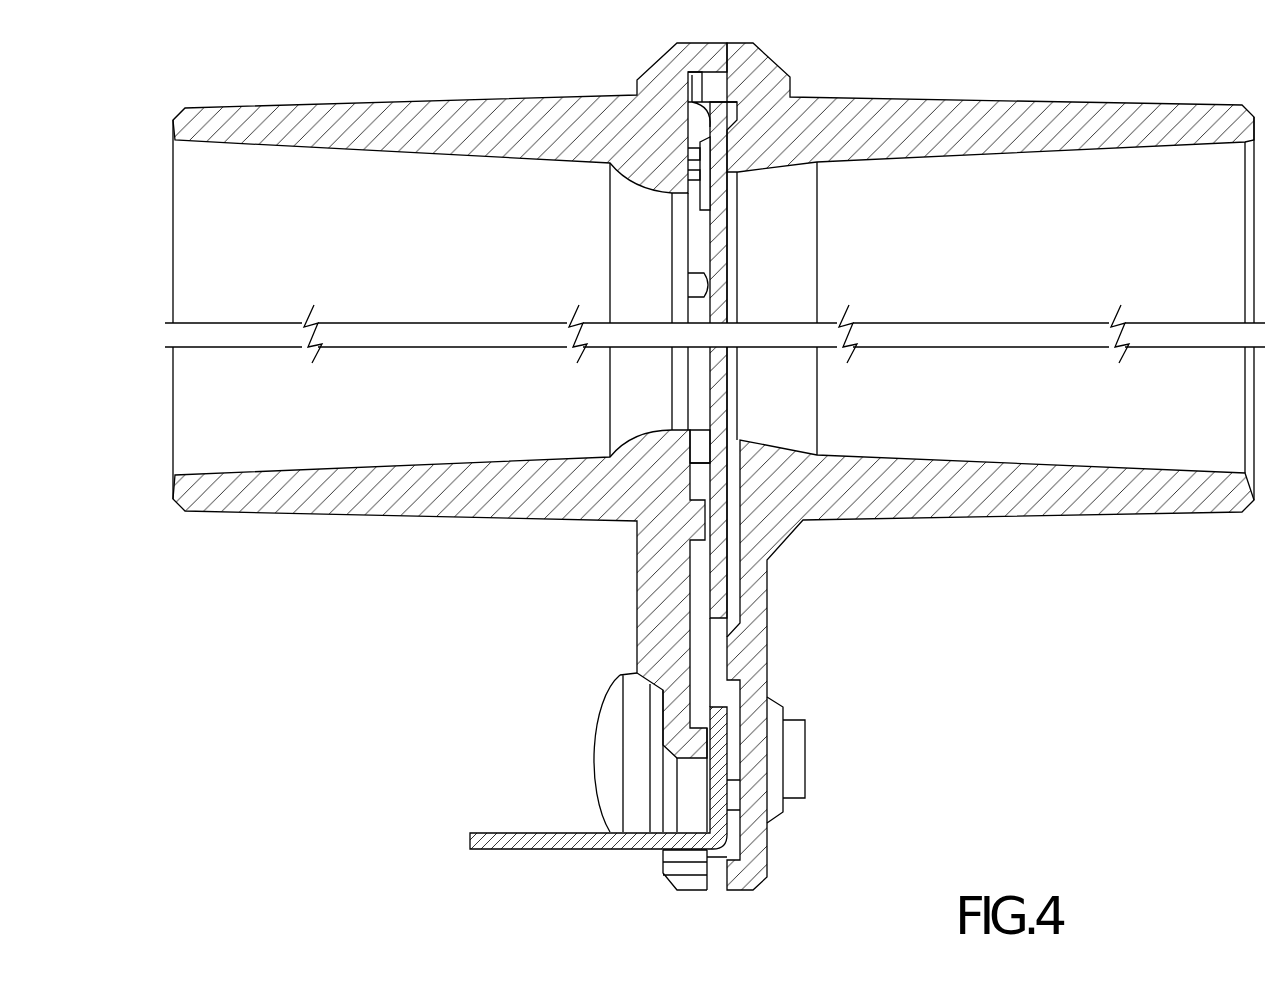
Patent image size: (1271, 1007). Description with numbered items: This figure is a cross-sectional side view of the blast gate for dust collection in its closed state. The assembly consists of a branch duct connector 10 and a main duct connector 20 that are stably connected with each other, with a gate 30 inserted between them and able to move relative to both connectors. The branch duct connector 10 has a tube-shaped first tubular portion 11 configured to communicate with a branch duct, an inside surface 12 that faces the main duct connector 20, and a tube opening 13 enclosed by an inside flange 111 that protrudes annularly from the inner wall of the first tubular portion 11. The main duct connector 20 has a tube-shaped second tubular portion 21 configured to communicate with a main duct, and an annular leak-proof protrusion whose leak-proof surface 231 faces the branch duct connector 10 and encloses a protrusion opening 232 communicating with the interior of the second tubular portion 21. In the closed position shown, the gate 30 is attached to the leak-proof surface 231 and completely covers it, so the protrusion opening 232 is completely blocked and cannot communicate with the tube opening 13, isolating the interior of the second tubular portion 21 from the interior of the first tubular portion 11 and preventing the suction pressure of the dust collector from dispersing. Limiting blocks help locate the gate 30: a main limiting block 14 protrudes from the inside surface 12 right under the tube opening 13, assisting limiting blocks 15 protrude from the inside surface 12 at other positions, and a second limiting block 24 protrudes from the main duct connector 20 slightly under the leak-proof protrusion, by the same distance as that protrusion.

The branch duct connector 10 is at (393, 592).
The first tubular portion 11 is at (287, 509).
The inside surface 12 is at (710, 107).
The tube opening 13 is at (672, 200).
The main limiting block 14 is at (700, 527).
The assisting limiting blocks 15 is at (698, 443).
The main duct connector 20 is at (1037, 592).
The second tubular portion 21 is at (1146, 509).
The second limiting block 24 is at (733, 657).
The gate 30 is at (537, 829).
The inside flange 111 is at (675, 433).
The leak-proof surface 231 is at (706, 497).
The protrusion opening 232 is at (737, 180).